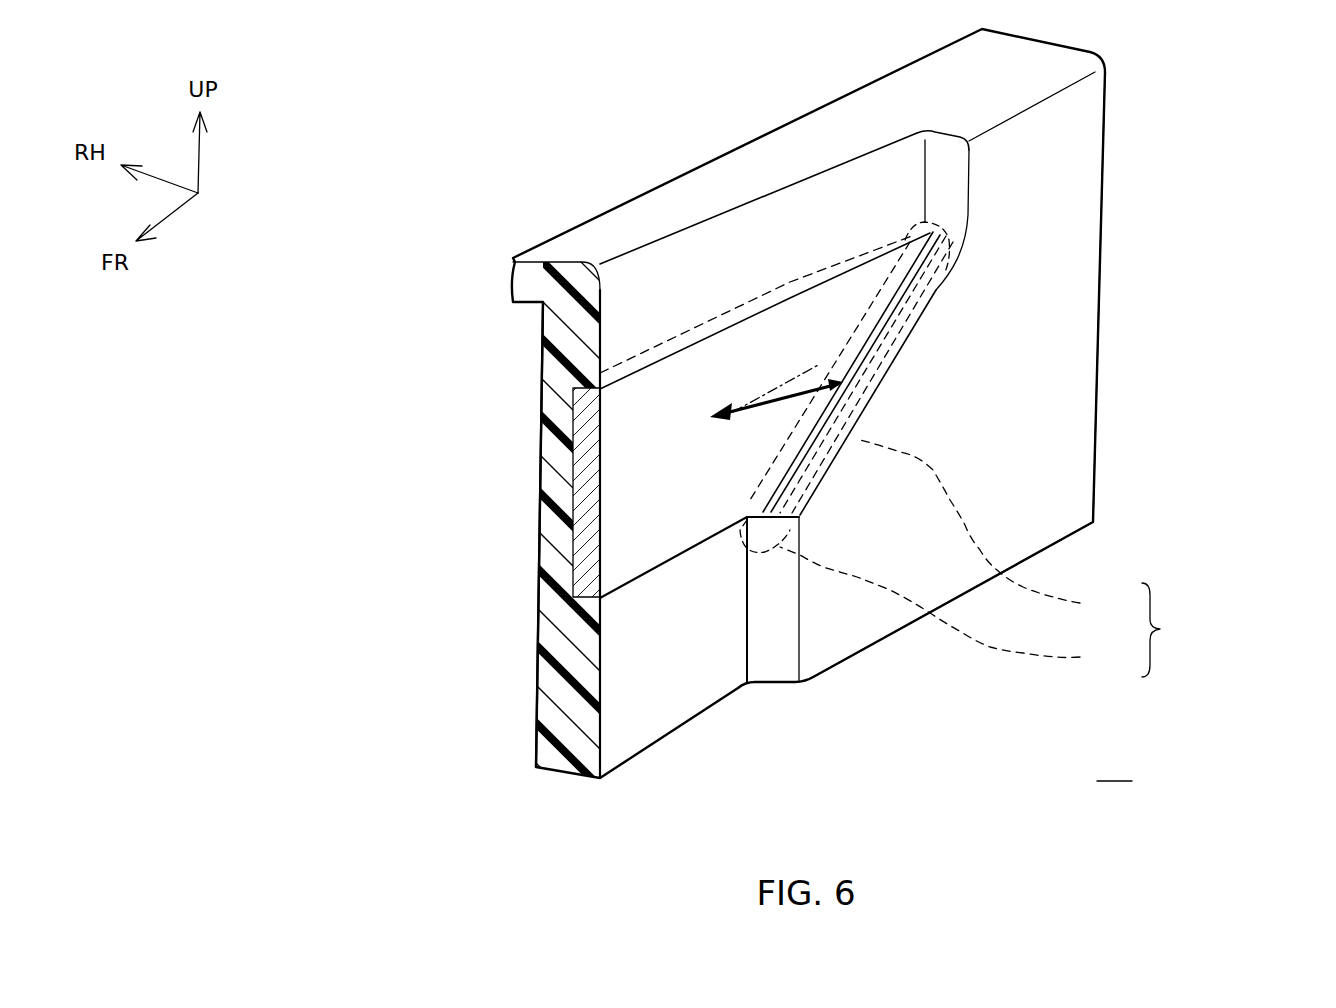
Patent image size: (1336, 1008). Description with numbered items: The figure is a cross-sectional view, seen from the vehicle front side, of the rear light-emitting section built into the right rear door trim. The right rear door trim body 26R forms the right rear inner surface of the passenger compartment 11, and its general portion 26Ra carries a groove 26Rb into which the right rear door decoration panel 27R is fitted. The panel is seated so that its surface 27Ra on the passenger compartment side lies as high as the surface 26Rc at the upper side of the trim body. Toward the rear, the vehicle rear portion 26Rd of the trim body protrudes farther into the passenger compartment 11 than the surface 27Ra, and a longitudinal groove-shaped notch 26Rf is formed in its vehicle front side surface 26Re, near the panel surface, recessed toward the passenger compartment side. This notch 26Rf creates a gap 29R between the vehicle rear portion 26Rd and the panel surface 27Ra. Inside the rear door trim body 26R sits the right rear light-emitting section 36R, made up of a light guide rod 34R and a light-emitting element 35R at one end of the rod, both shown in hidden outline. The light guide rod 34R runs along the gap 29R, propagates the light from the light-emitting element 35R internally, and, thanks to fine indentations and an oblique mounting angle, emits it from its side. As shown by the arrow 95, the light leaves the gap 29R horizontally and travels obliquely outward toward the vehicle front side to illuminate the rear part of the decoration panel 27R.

The right rear door trim body 26R is at (693, 764).
The general portion 26Ra is at (542, 362).
The groove 26Rb is at (573, 468).
The surface at the upper side of the rear door trim body 26Rc is at (760, 237).
The vehicle rear portion 26Rd is at (1082, 290).
The vehicle front side surface 26Re is at (950, 273).
The notch 26Rf is at (843, 413).
The right rear door decoration panel 27R is at (583, 548).
The surface of the rear door decoration panel 27Ra is at (627, 553).
The gap 29R is at (920, 254).
The light guide rod 34R is at (997, 529).
The light-emitting element 35R is at (957, 609).
The right rear light-emitting section 36R is at (1179, 630).
The arrow 95 is at (778, 395).
The passenger compartment 11 is at (1114, 766).